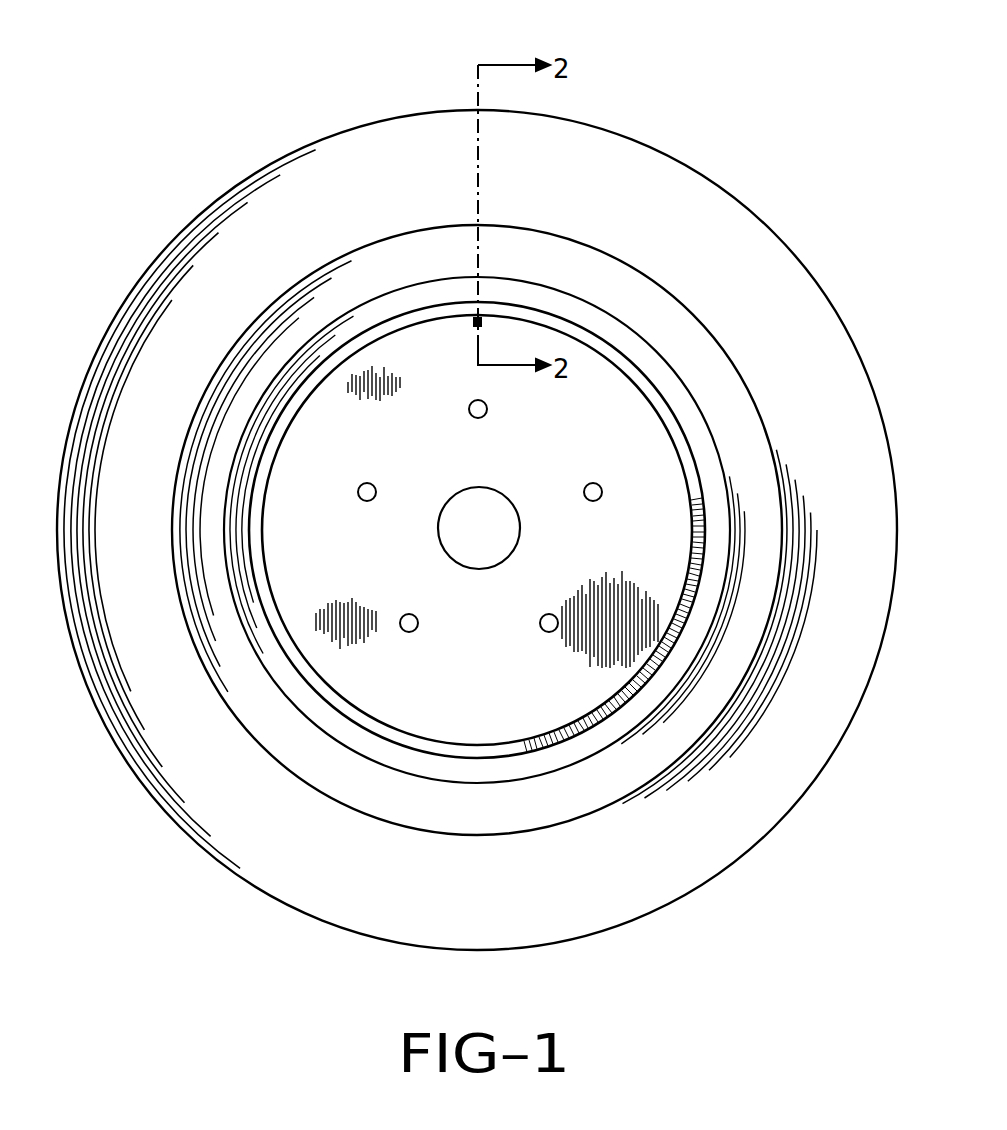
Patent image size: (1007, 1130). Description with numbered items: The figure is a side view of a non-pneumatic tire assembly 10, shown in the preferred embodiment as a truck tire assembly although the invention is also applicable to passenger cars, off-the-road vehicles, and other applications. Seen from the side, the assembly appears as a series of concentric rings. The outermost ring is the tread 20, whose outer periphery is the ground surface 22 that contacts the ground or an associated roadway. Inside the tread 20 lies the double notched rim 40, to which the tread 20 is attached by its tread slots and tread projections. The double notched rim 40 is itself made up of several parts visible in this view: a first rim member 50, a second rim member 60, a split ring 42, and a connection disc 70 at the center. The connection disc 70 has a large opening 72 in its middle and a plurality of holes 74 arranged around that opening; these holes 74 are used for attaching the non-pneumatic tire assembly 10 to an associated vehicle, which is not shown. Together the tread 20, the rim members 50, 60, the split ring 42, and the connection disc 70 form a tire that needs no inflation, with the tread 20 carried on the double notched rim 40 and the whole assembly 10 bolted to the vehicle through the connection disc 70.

The non-pneumatic tire assembly 10 is at (252, 62).
The tread 20 is at (628, 165).
The ground surface 22 is at (752, 208).
The double notched rim 40 is at (497, 709).
The split ring 42 is at (695, 422).
The first rim member 50 is at (702, 500).
The second rim member 60 is at (695, 349).
The connection disc 70 is at (607, 578).
The large opening 72 is at (475, 511).
The holes 74 is at (409, 614).